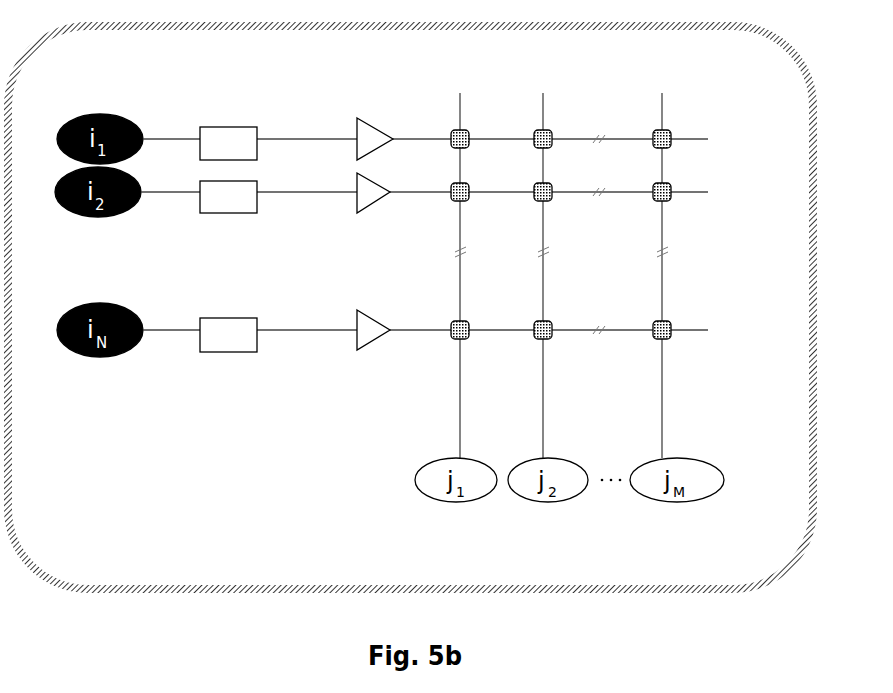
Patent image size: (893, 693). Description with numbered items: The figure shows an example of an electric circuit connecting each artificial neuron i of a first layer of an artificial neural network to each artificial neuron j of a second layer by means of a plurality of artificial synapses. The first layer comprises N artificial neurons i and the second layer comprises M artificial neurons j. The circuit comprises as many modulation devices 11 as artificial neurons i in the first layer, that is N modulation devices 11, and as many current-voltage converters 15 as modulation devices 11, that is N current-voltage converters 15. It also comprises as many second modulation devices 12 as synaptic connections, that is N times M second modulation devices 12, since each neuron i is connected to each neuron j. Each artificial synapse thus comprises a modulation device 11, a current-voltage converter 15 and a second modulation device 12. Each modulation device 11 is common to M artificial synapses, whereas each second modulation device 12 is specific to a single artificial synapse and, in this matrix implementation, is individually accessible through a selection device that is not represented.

The modulation device 11 is at (247, 318).
The second modulation device 12 is at (672, 148).
The current-voltage converter 15 is at (357, 139).